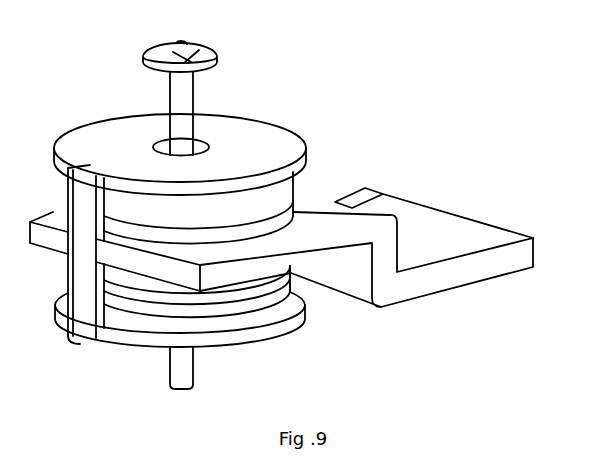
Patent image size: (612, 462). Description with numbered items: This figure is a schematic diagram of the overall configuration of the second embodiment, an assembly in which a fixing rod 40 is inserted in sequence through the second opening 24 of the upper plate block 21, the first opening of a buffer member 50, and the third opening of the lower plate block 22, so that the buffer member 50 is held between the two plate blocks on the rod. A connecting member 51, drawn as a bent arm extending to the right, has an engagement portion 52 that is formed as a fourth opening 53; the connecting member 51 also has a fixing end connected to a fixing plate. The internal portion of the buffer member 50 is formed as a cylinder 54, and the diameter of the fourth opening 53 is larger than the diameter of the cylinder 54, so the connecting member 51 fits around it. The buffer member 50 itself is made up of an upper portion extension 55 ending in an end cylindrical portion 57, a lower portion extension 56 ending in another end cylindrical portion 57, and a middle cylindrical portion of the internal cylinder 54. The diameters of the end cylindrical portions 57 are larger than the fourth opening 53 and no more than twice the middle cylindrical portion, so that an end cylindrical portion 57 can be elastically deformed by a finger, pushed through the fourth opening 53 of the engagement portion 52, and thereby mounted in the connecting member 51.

The fixing rod 40 is at (192, 83).
The second opening 24 is at (207, 143).
The upper plate block 21 is at (270, 127).
The end cylindrical portion 57 is at (293, 189).
The upper portion extension 55 is at (293, 191).
The buffer member 50 is at (258, 228).
The cylinder 54 is at (262, 231).
The engagement portion 52 is at (265, 233).
The fourth opening 53 is at (268, 236).
The connecting member 51 is at (405, 226).
The lower portion extension 56 is at (293, 288).
The lower plate block 22 is at (305, 330).